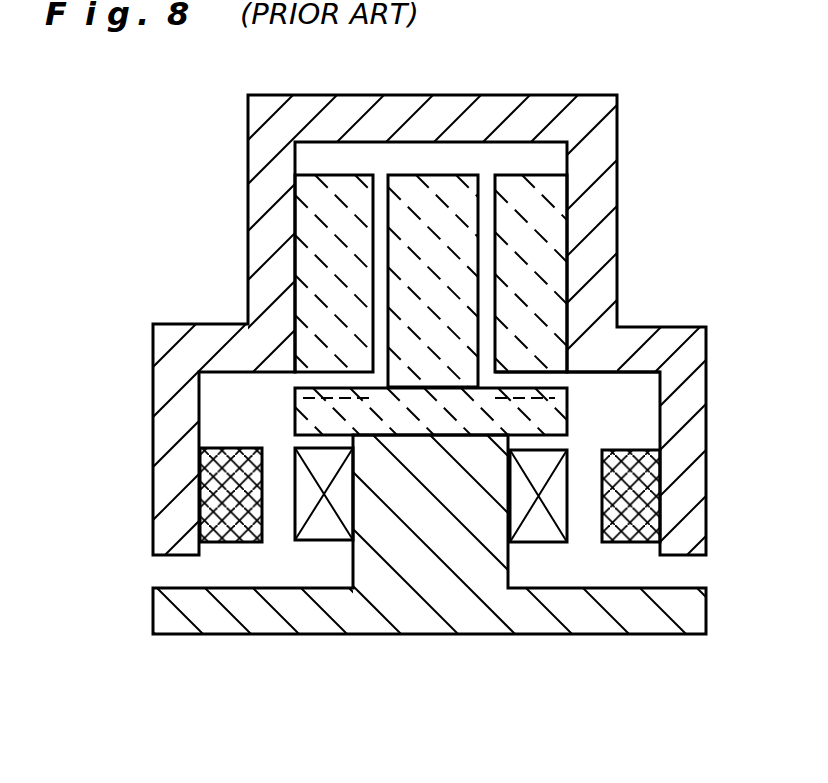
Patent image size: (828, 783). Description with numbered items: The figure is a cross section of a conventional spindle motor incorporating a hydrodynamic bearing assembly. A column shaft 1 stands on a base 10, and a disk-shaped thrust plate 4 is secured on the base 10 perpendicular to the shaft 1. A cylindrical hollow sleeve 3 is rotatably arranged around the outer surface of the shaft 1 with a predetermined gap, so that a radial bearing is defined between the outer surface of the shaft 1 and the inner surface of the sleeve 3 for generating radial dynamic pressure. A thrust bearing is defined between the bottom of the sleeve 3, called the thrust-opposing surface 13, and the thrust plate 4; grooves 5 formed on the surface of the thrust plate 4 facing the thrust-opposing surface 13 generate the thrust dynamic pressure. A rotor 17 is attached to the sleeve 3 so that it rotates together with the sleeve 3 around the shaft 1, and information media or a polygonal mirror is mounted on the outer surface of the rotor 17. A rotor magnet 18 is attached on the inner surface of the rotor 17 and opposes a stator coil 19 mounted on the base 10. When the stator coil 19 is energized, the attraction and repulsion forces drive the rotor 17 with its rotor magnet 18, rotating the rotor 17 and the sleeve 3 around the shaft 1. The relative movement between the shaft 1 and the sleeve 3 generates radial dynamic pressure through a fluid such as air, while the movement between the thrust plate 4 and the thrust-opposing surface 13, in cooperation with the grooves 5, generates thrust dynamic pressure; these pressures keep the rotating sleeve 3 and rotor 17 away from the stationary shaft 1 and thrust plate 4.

The rotor 17 is at (597, 110).
The sleeve 3 is at (550, 215).
The shaft 1 is at (400, 240).
The thrust-opposing surface 13 is at (527, 370).
The grooves 5 is at (553, 390).
The thrust plate 4 is at (560, 410).
The base 10 is at (455, 603).
The stator coil 19 is at (547, 530).
The rotor magnet 18 is at (640, 481).